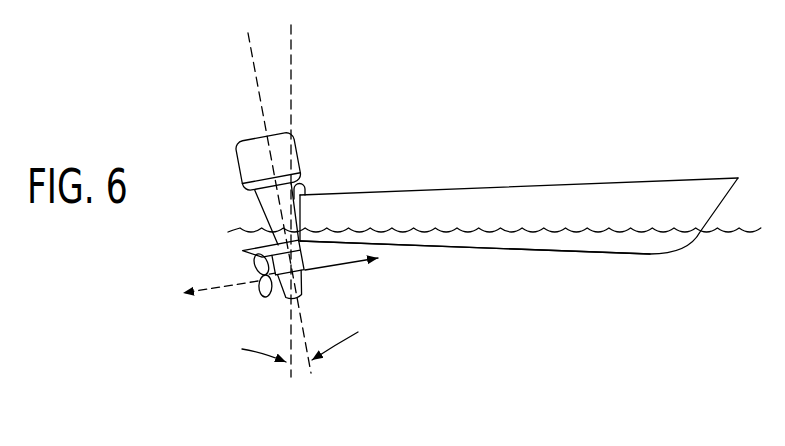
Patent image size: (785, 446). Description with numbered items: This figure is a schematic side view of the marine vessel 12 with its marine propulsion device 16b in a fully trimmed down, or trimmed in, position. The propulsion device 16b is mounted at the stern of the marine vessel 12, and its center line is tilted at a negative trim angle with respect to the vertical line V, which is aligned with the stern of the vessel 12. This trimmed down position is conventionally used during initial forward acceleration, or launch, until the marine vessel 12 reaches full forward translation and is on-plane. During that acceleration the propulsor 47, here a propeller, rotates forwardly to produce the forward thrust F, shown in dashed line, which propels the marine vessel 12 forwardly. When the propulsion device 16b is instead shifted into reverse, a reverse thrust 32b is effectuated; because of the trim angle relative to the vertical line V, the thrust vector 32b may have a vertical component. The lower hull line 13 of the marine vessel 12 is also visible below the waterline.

The marine vessel 12 is at (663, 193).
The hull bottom of the marine vessel 13 is at (633, 254).
The marine propulsion device 16b is at (243, 155).
The reverse thrust vector 32b is at (341, 272).
The propulsor 47 is at (262, 301).
The vertical line V is at (292, 54).
The forward thrust F is at (220, 285).